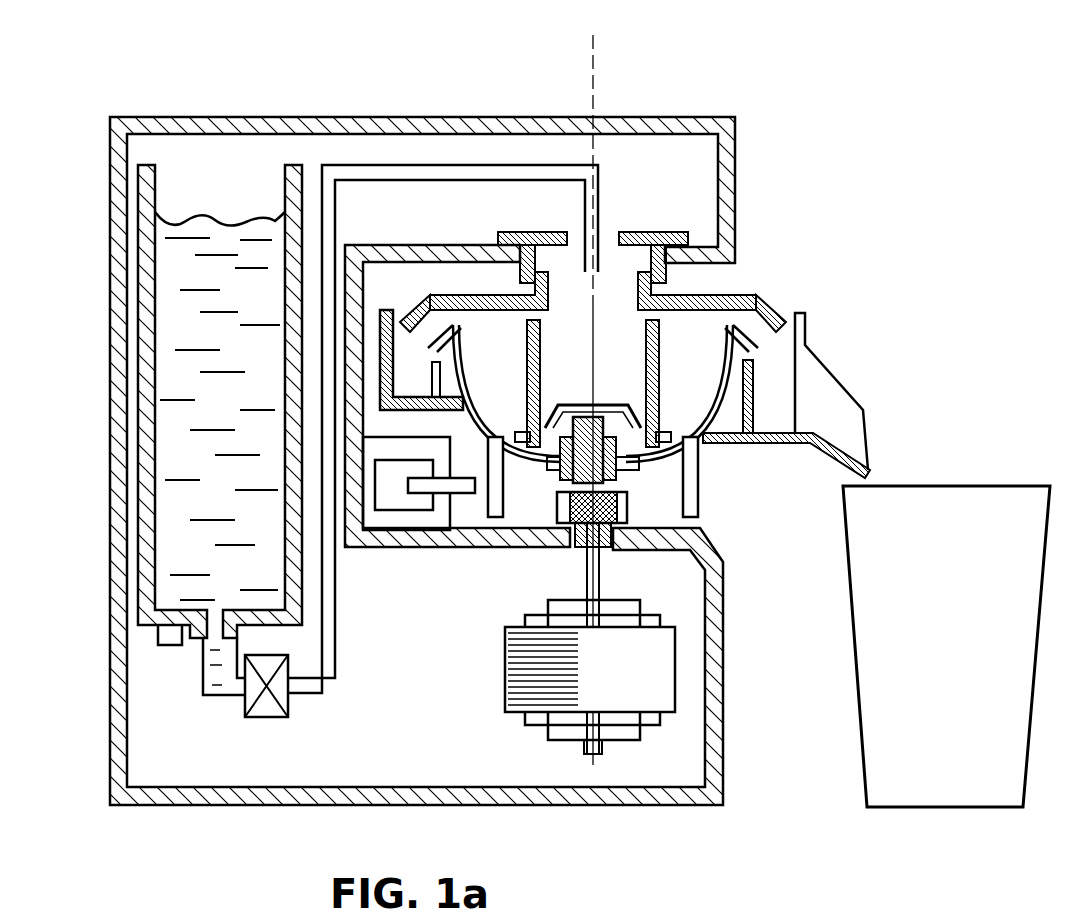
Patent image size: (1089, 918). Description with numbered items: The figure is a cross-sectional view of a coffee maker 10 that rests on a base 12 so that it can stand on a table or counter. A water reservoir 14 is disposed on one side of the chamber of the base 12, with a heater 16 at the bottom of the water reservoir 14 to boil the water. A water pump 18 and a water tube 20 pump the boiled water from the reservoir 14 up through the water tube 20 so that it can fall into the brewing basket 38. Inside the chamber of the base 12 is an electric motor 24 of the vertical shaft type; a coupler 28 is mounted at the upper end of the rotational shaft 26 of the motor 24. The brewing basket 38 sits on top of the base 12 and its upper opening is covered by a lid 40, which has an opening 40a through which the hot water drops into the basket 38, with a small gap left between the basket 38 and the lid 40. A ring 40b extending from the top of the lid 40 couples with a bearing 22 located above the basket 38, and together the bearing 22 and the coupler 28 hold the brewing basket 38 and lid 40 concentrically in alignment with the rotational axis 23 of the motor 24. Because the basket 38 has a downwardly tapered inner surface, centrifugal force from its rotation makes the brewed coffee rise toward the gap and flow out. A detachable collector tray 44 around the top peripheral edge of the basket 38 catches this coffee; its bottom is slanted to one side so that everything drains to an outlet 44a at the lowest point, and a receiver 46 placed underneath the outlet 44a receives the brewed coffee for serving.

The coffee maker 10 is at (645, 91).
The base 12 is at (712, 760).
The water reservoir 14 is at (178, 325).
The heater 16 is at (167, 640).
The water pump 18 is at (267, 705).
The water tube 20 is at (350, 172).
The bearing 22 is at (520, 240).
The rotational axis 23 is at (593, 92).
The electric motor 24 is at (650, 657).
The rotational shaft 26 is at (597, 560).
The coupler 28 is at (625, 505).
The brewing basket 38 is at (710, 443).
The lid 40 is at (630, 276).
The opening 40a is at (612, 292).
The ring 40b is at (668, 264).
The collector tray 44 is at (831, 362).
The outlet 44a is at (813, 403).
The receiver 46 is at (970, 523).